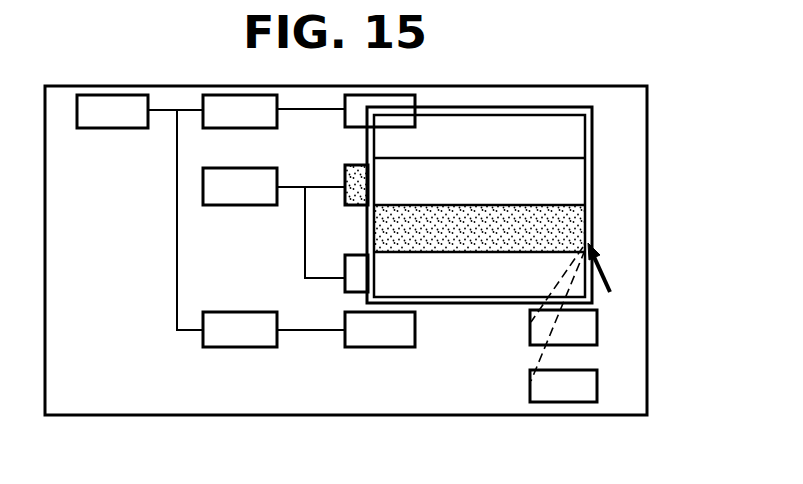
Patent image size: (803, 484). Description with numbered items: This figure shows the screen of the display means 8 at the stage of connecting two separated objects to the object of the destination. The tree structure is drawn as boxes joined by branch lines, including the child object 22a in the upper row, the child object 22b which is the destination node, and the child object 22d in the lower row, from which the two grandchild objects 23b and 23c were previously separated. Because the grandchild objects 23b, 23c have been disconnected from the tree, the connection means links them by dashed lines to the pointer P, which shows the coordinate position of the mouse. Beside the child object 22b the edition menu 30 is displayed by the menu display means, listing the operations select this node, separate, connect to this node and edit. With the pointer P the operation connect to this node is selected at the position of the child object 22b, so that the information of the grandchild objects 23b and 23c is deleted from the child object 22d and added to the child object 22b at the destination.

The display means 8 is at (535, 86).
The child object 22a is at (400, 95).
The child object 22b is at (356, 165).
The child object 22d is at (378, 347).
The edition menu 30 is at (594, 168).
The pointer P is at (603, 268).
The grandchild object 23b is at (597, 327).
The grandchild object 23c is at (597, 383).